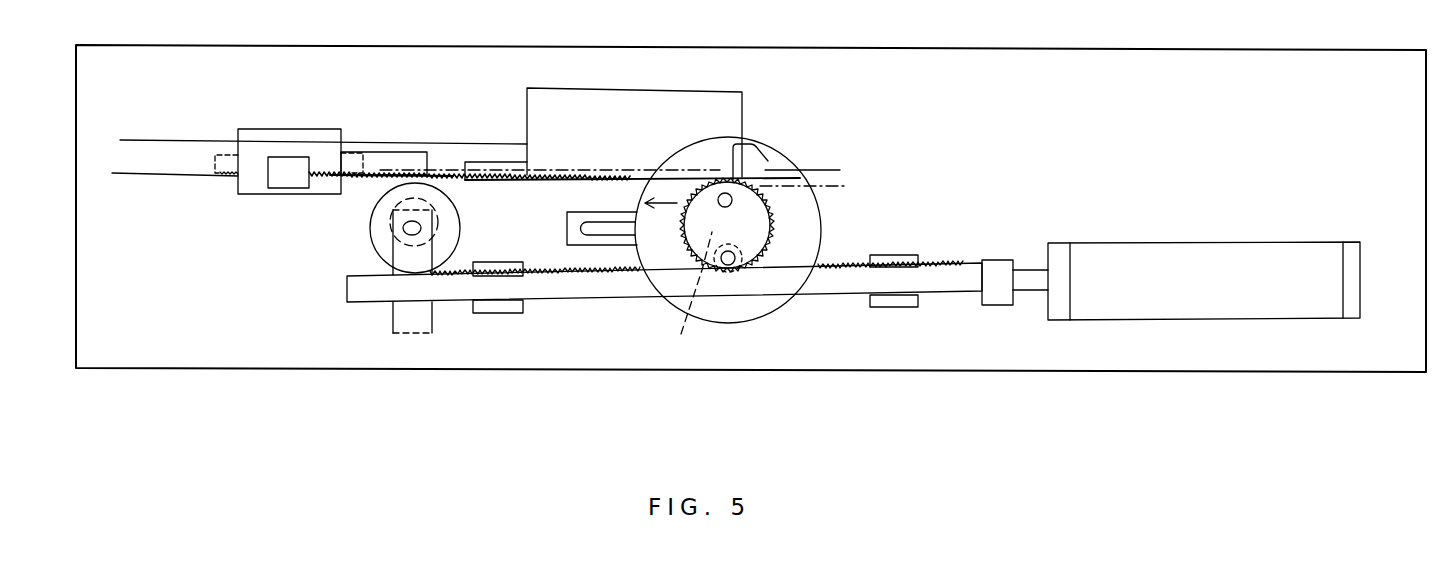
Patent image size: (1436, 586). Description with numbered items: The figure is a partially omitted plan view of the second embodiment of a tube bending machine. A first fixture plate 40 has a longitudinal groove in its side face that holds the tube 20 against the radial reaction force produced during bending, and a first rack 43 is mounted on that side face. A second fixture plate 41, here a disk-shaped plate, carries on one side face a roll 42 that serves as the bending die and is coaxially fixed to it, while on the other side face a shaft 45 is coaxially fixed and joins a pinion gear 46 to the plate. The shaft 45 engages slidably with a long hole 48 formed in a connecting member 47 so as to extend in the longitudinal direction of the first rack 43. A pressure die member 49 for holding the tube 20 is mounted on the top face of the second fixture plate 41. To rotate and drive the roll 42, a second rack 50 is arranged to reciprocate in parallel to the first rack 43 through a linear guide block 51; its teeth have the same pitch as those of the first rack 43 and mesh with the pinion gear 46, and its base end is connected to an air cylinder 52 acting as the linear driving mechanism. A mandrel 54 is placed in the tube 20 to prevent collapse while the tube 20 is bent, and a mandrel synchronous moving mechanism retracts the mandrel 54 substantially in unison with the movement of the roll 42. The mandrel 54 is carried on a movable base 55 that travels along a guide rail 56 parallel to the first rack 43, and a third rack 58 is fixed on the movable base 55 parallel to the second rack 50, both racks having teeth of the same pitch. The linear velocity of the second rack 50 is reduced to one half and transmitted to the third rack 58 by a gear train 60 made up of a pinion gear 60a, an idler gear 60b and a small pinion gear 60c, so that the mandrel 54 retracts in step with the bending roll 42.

The tube 20 is at (678, 172).
The first fixture plate 40 is at (617, 117).
The second fixture plate 41 is at (784, 188).
The roll 42 is at (765, 228).
The first rack 43 is at (498, 167).
The shaft 45 is at (738, 262).
The pinion gear 46 is at (699, 297).
The connecting member 47 is at (567, 222).
The long hole 48 is at (605, 230).
The pressure die member 49 is at (760, 157).
The second rack 50 is at (620, 287).
The linear guide block 51 is at (497, 315).
The air cylinder 52 is at (1208, 260).
The mandrel 54 is at (443, 170).
The movable base 55 is at (303, 145).
The guide rail 56 is at (130, 155).
The third rack 58 is at (380, 160).
The gear train 60 is at (365, 230).
The pinion gear 60a is at (453, 230).
The idler gear 60b is at (458, 200).
The small pinion gear 60c is at (352, 188).